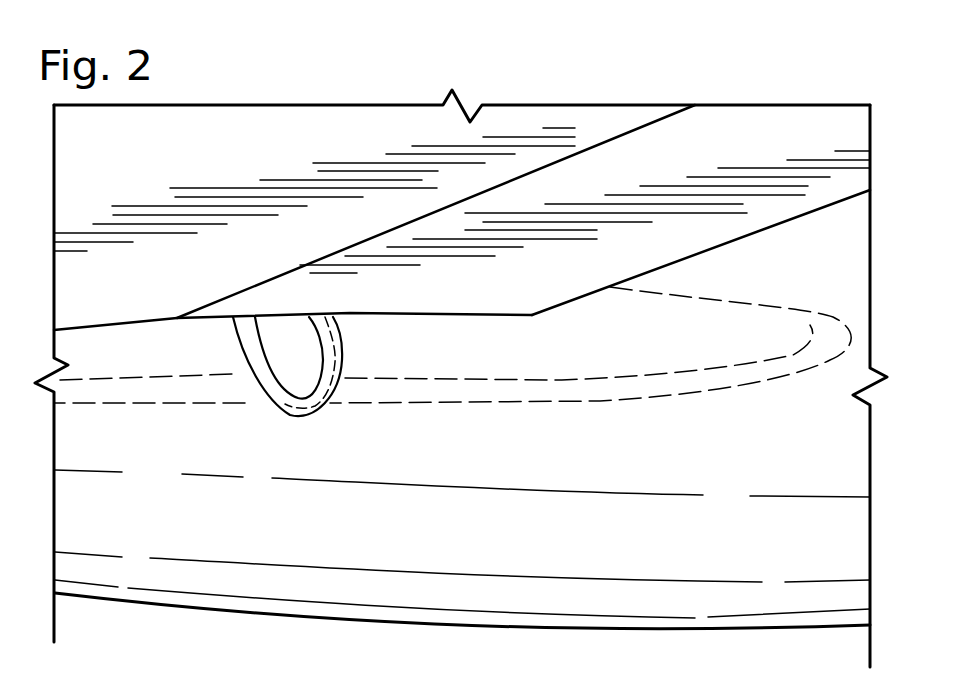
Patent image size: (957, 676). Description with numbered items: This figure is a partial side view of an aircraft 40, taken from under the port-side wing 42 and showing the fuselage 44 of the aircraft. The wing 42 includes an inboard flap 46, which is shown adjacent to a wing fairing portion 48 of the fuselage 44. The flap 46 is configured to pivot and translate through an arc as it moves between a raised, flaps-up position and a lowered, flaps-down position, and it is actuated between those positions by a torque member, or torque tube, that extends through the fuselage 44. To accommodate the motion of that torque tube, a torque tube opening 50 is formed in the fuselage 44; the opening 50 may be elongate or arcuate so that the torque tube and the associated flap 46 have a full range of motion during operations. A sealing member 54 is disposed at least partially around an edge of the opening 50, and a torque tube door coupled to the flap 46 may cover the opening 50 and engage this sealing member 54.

The aircraft 40 is at (730, 80).
The port-side wing 42 is at (205, 158).
The fuselage 44 is at (216, 543).
The inboard flap 46 is at (529, 280).
The wing fairing portion 48 is at (663, 345).
The torque tube opening 50 is at (280, 357).
The sealing member 54 is at (306, 403).